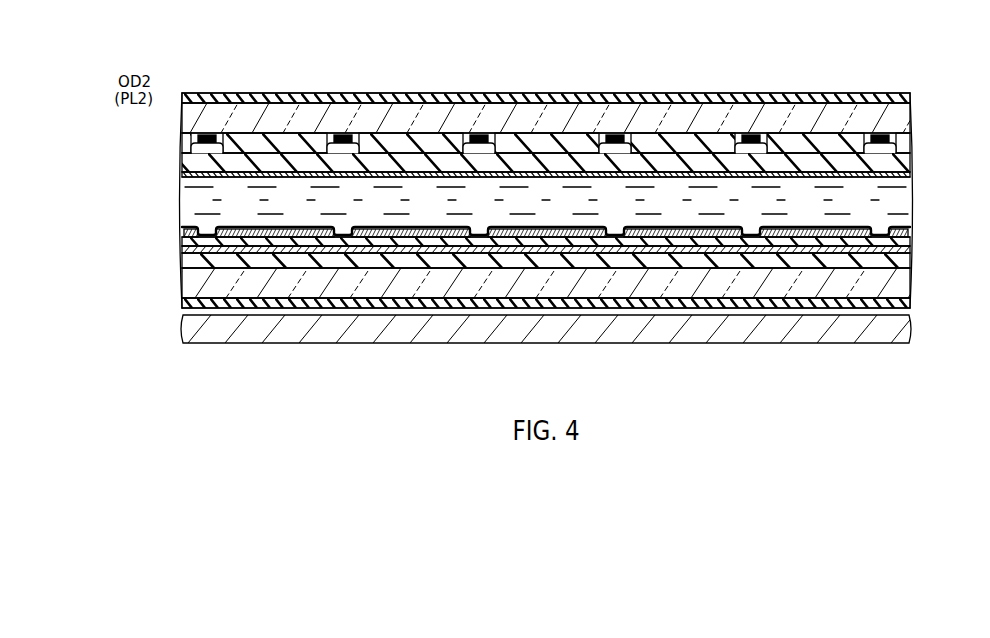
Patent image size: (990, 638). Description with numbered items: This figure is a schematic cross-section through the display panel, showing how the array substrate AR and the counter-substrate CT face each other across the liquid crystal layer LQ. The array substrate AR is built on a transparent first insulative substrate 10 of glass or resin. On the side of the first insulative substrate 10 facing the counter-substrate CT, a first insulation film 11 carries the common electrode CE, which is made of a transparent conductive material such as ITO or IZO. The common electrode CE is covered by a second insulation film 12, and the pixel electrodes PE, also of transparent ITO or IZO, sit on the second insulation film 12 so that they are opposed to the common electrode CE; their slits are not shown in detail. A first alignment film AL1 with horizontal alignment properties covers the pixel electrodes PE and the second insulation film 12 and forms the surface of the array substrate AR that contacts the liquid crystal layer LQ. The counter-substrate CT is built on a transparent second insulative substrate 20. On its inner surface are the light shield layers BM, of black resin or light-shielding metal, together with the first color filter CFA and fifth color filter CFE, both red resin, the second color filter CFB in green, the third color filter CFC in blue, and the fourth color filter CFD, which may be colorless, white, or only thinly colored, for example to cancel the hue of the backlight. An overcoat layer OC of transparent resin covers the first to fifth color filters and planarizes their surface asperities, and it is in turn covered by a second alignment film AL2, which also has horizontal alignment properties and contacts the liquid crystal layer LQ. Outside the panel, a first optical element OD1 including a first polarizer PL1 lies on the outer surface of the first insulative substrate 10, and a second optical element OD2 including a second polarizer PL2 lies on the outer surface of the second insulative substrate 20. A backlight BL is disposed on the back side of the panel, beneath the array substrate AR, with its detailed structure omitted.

The counter-substrate CT is at (910, 144).
The array substrate AR is at (910, 262).
The liquid crystal layer LQ is at (905, 211).
The second optical element OD2 is at (190, 100).
The second polarizer PL2 is at (546, 98).
The second insulative substrate 20 is at (190, 126).
The light shield layers BM is at (209, 135).
The first color filter CFA is at (277, 148).
The second color filter CFB is at (413, 148).
The third color filter CFC is at (549, 148).
The fourth color filter CFD is at (685, 148).
The fifth color filter CFE is at (820, 148).
The overcoat layer OC is at (190, 163).
The second alignment film AL2 is at (186, 175).
The first alignment film AL1 is at (186, 226).
The pixel electrodes PE is at (278, 236).
The second insulation film 12 is at (186, 241).
The common electrode CE is at (190, 250).
The first insulation film 11 is at (190, 261).
The first insulative substrate 10 is at (190, 287).
The first optical element OD1 is at (186, 302).
The first polarizer PL1 is at (510, 316).
The backlight BL is at (183, 330).